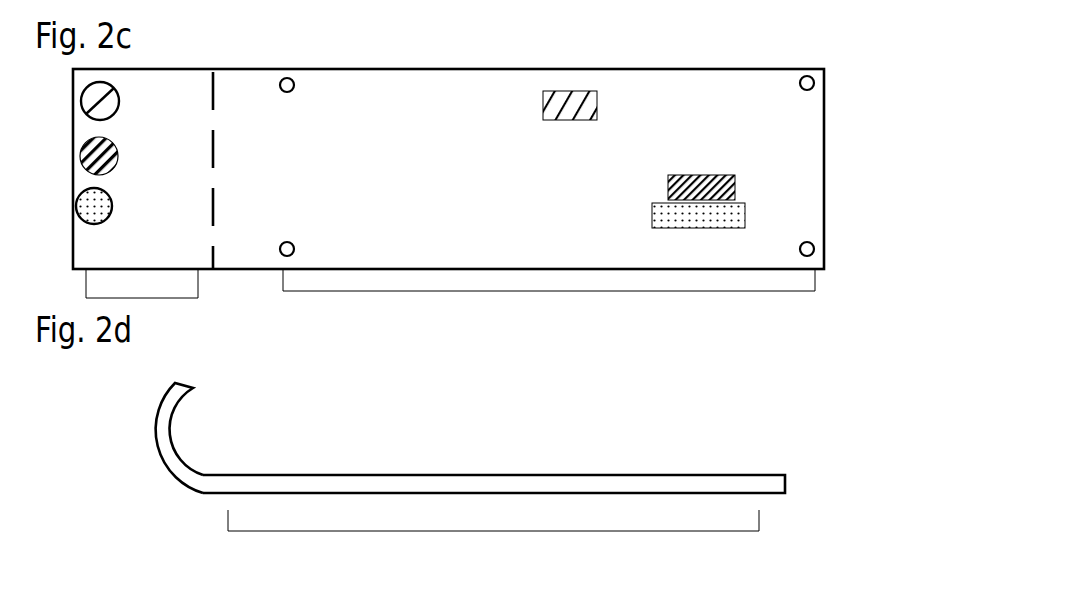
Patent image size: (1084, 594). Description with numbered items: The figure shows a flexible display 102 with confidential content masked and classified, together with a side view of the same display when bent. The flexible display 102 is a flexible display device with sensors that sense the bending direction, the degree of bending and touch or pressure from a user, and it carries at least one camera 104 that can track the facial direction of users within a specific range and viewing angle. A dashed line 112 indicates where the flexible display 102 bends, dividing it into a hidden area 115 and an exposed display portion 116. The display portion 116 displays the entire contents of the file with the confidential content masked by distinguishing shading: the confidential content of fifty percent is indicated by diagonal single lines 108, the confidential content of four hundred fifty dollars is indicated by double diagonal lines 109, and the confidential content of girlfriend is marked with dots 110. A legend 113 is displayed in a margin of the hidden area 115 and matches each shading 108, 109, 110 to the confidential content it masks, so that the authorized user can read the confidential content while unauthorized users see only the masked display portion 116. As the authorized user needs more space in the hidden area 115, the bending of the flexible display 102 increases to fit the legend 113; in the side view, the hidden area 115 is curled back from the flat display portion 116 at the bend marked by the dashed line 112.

In FIG. 2C, the flexible display 102 is at (72, 262).
In FIG. 2D, the flexible display 102 is at (263, 473).
In FIG. 2C, the camera 104 is at (284, 72).
In FIG. 2C, the diagonal single lines 108 is at (567, 83).
In FIG. 2C, the double diagonal lines 109 is at (705, 176).
In FIG. 2C, the dots 110 is at (720, 238).
In FIG. 2C, the dashed line 112 is at (212, 88).
In FIG. 2D, the dashed line 112 is at (205, 470).
In FIG. 2C, the legend 113 is at (85, 130).
In FIG. 2C, the hidden area 115 is at (155, 302).
In FIG. 2D, the hidden area 115 is at (162, 422).
In FIG. 2C, the display portion 116 is at (578, 291).
In FIG. 2D, the display portion 116 is at (520, 531).